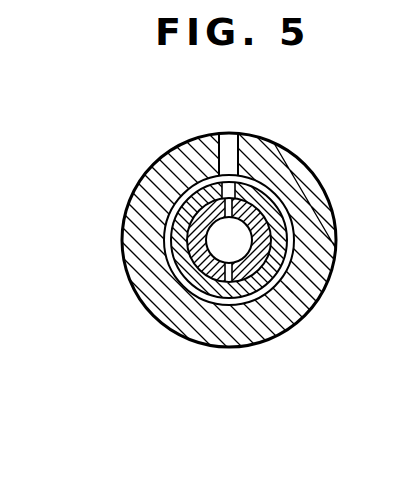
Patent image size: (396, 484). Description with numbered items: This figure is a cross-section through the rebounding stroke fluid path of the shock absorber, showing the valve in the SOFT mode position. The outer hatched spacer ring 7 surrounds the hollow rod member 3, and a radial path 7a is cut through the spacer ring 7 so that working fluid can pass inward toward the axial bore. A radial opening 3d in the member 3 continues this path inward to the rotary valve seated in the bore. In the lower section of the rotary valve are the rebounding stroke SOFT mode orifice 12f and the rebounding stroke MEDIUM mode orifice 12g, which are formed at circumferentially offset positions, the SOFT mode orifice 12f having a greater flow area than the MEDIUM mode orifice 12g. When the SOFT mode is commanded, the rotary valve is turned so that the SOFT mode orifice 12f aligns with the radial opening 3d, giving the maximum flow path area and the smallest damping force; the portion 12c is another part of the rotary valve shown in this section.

The spacer ring 7 is at (306, 160).
The radial path 7a is at (228, 152).
The piston rod 3 is at (165, 242).
The radial opening 3d is at (200, 186).
The coil spring portion 12c is at (193, 262).
The rebounding stroke SOFT mode orifice 12f is at (237, 207).
The rebounding stroke MEDIUM mode orifice 12g is at (292, 292).